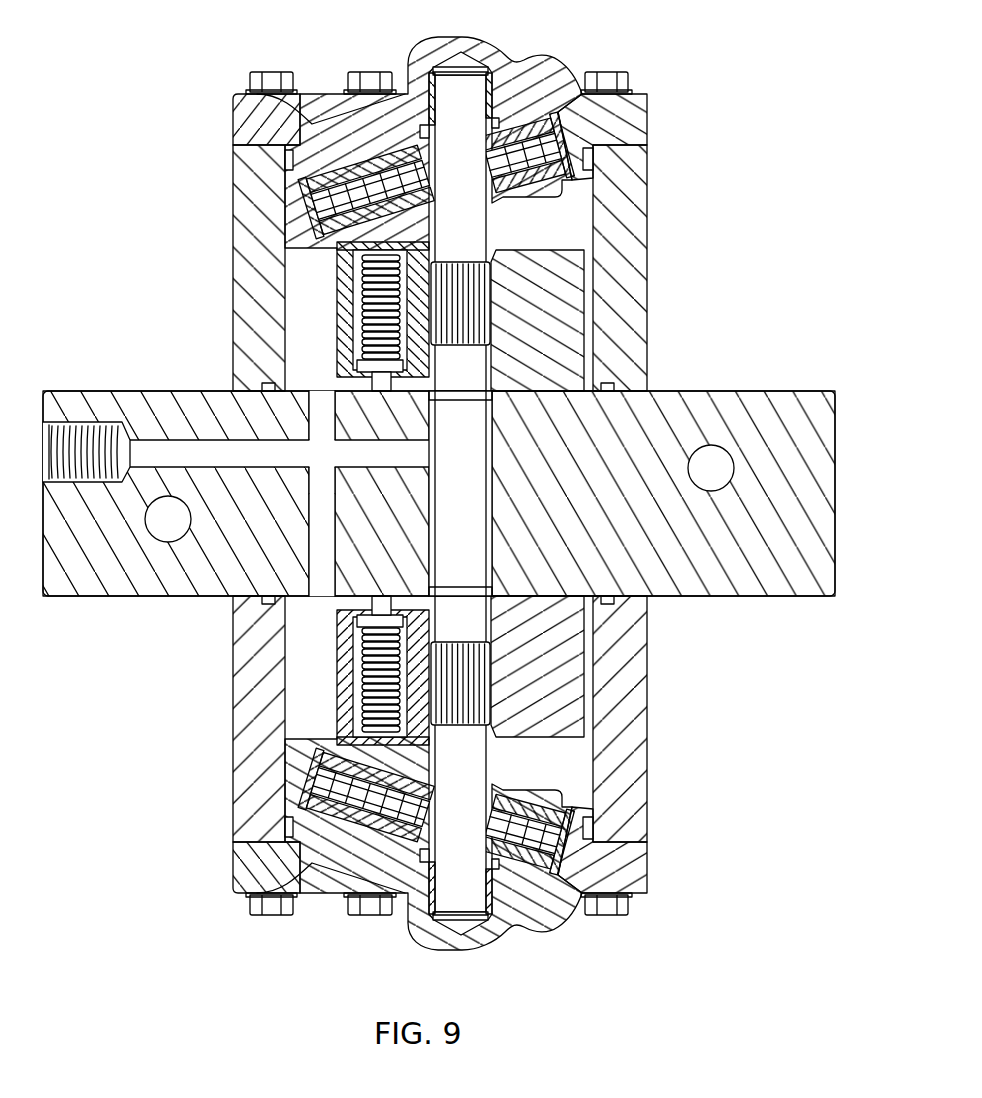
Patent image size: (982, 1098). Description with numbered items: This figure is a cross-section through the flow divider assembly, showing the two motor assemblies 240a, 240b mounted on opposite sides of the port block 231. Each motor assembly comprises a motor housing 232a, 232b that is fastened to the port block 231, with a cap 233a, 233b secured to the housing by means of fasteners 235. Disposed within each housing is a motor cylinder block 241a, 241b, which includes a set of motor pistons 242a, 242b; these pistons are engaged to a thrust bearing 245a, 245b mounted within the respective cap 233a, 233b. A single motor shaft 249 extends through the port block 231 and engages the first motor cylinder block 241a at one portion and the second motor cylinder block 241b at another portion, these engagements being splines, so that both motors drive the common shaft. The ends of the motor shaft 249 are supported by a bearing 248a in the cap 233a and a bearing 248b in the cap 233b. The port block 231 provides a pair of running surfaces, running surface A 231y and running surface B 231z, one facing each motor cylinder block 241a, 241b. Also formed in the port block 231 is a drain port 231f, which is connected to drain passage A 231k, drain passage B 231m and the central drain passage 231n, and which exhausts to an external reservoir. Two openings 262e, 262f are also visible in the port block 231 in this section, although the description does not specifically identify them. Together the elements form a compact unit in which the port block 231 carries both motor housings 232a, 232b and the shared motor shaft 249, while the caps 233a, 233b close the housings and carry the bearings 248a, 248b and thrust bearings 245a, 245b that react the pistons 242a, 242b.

The port block 231 is at (157, 389).
The drain port 231f is at (60, 432).
The drain passage A 231k is at (327, 412).
The drain passage B 231m is at (327, 548).
The central drain passage 231n is at (410, 462).
The running surface A 231y is at (550, 386).
The running surface B 231z is at (550, 604).
The motor housing 232a is at (243, 268).
The motor housing 232b is at (243, 722).
The cap 233a is at (243, 110).
The cap 233b is at (243, 879).
The fasteners 235 is at (606, 73).
The motor assembly 240a is at (705, 198).
The motor assembly 240b is at (705, 790).
The motor cylinder block 241a is at (560, 283).
The motor cylinder block 241b is at (560, 705).
The motor pistons 242a is at (355, 268).
The motor pistons 242b is at (355, 720).
The thrust bearing 245a is at (318, 187).
The thrust bearing 245b is at (318, 800).
The bearing 248a is at (433, 97).
The bearing 248b is at (433, 892).
The motor shaft 249 is at (478, 526).
The right mounting hole 262e is at (700, 460).
The left mounting hole 262f is at (168, 530).